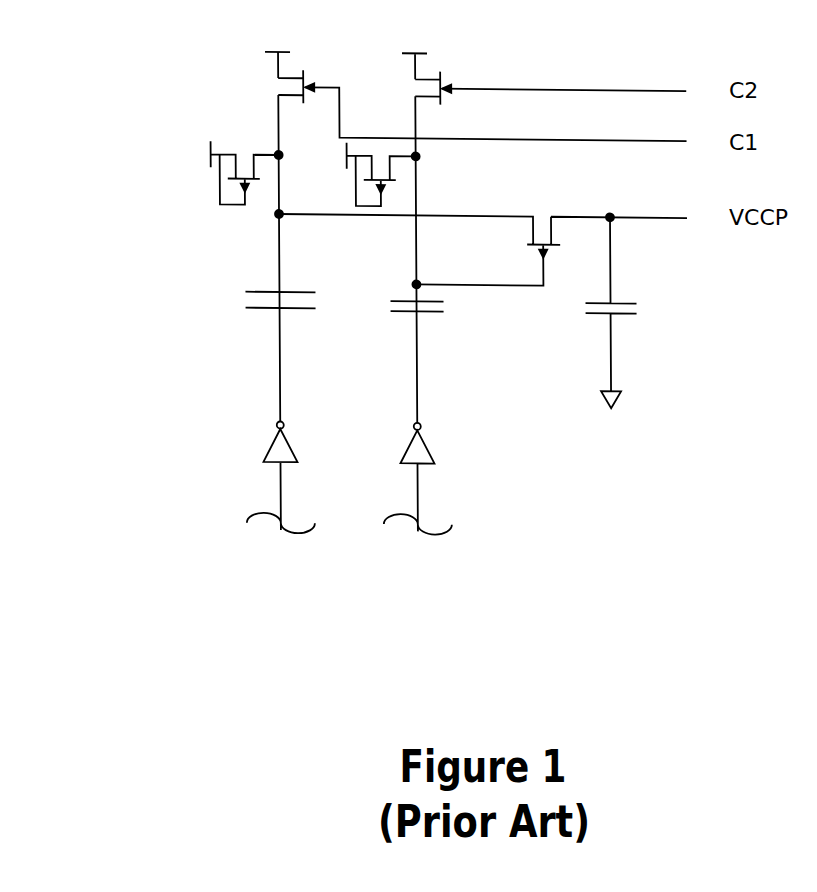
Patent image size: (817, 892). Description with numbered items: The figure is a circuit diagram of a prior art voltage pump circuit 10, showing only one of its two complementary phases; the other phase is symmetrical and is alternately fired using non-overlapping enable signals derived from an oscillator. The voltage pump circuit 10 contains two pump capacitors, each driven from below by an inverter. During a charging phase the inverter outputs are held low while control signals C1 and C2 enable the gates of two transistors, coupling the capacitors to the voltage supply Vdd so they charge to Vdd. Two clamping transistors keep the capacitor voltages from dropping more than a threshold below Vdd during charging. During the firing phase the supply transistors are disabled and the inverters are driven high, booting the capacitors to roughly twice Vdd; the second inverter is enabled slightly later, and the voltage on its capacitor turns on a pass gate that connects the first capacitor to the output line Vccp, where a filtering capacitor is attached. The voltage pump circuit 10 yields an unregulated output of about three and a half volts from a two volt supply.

The voltage pump circuit 10 is at (124, 79).